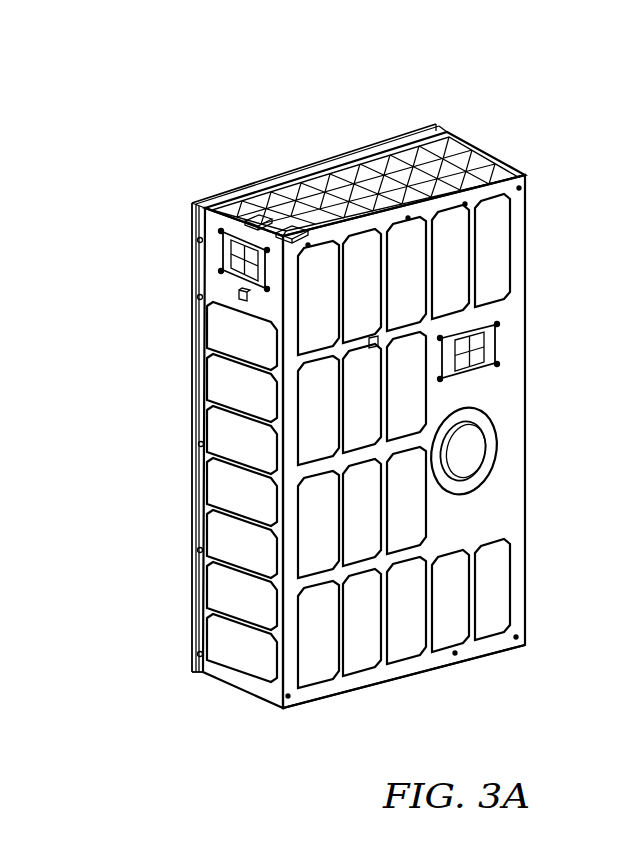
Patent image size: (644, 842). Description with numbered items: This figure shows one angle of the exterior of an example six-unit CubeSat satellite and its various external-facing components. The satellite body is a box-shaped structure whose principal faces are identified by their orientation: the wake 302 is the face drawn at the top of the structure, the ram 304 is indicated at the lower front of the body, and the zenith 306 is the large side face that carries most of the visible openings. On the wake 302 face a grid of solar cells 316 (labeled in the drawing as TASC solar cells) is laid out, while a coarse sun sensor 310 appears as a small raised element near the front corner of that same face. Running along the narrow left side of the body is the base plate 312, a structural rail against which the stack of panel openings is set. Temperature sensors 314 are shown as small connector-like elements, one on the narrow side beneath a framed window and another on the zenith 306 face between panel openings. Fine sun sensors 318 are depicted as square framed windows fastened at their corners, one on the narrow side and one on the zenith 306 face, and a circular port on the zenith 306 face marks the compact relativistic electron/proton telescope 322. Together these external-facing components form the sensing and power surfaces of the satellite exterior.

The wake 302 is at (477, 166).
The ram 304 is at (475, 663).
The zenith 306 is at (495, 393).
The coarse sun sensor 310 is at (260, 215).
The base plate 312 is at (200, 242).
The temperature sensors 314 is at (370, 345).
The solar cells 316 is at (317, 636).
The fine sun sensors 318 is at (497, 343).
The compact relativistic electron/proton telescope 322 is at (468, 458).